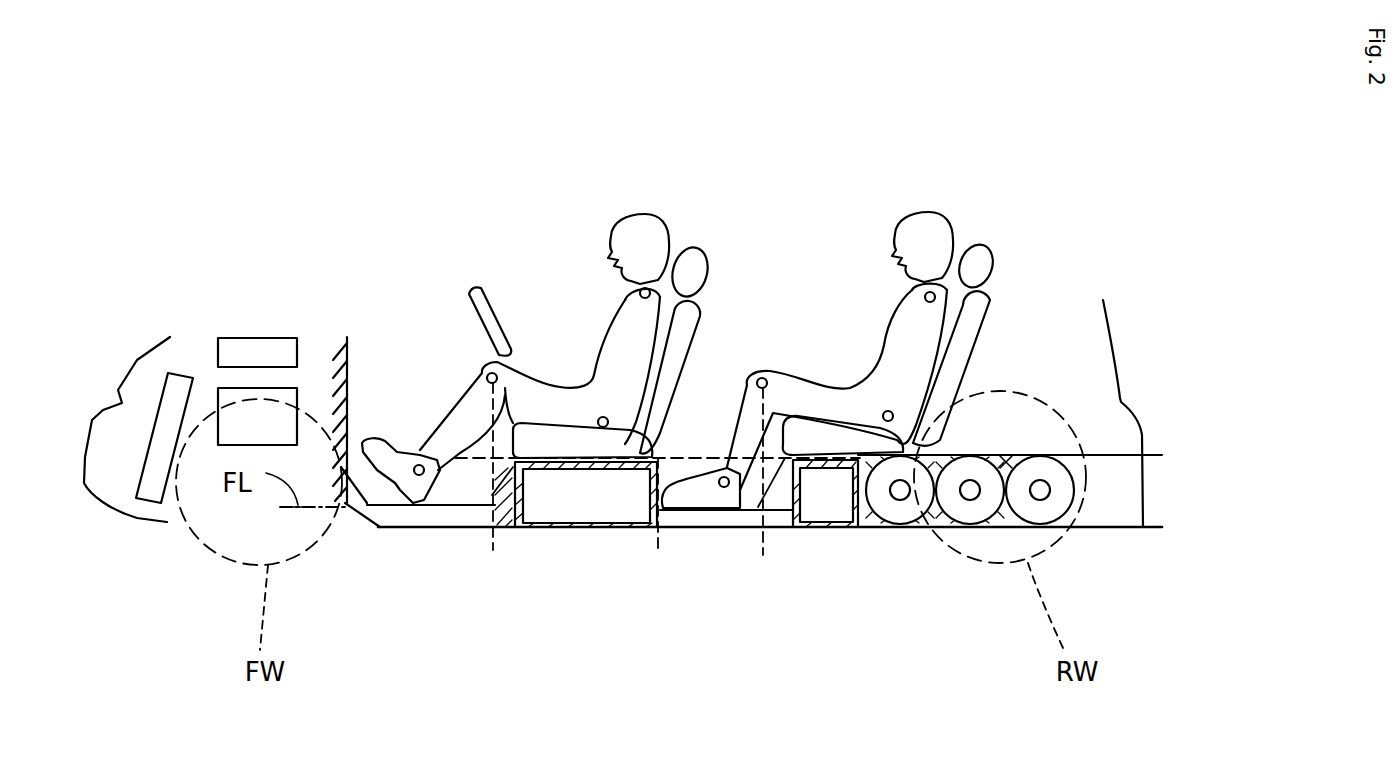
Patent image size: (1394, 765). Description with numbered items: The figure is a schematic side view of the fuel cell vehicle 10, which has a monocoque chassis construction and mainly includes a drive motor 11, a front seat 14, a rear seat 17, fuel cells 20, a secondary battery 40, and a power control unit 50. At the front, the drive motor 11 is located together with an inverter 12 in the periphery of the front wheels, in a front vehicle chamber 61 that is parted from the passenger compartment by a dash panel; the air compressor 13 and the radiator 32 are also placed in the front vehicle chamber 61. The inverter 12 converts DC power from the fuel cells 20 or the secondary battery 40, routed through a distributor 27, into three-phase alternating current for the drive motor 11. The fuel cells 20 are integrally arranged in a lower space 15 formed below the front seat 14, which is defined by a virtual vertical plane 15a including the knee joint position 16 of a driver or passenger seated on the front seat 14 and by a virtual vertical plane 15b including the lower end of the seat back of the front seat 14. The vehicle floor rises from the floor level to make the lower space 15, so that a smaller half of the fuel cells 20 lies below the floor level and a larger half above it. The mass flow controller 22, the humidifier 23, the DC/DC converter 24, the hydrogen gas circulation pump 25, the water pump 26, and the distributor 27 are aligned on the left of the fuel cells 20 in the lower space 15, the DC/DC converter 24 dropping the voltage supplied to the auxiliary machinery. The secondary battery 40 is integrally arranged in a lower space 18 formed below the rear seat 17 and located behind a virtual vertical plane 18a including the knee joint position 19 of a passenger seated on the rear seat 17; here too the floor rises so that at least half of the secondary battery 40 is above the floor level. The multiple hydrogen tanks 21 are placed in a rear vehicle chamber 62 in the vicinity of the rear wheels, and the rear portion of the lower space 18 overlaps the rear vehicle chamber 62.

The fuel cell vehicle 10 is at (1059, 226).
The drive motor 11 is at (288, 347).
The inverter 12 is at (257, 416).
The air compressor 13 is at (281, 397).
The front seat 14 is at (537, 437).
The lower space 15 is at (586, 592).
The virtual vertical plane 15a is at (491, 560).
The virtual vertical plane 15b is at (657, 565).
The knee joint position 16 is at (483, 364).
The rear seat 17 is at (817, 427).
The lower space 18 is at (805, 585).
The virtual vertical plane 18a is at (761, 565).
The knee joint position 19 is at (760, 381).
The fuel cells 20 is at (606, 596).
The hydrogen tanks 21 is at (907, 510).
The mass flow controller 22 is at (586, 496).
The humidifier 23 is at (586, 496).
The DC/DC converter 24 is at (586, 496).
The hydrogen gas circulation pump 25 is at (586, 496).
The water pump 26 is at (586, 496).
The distributor 27 is at (563, 497).
The radiator 32 is at (149, 494).
The secondary battery 40 is at (827, 500).
The power control unit 50 is at (228, 347).
The front vehicle chamber 61 is at (325, 397).
The rear vehicle chamber 62 is at (1013, 455).